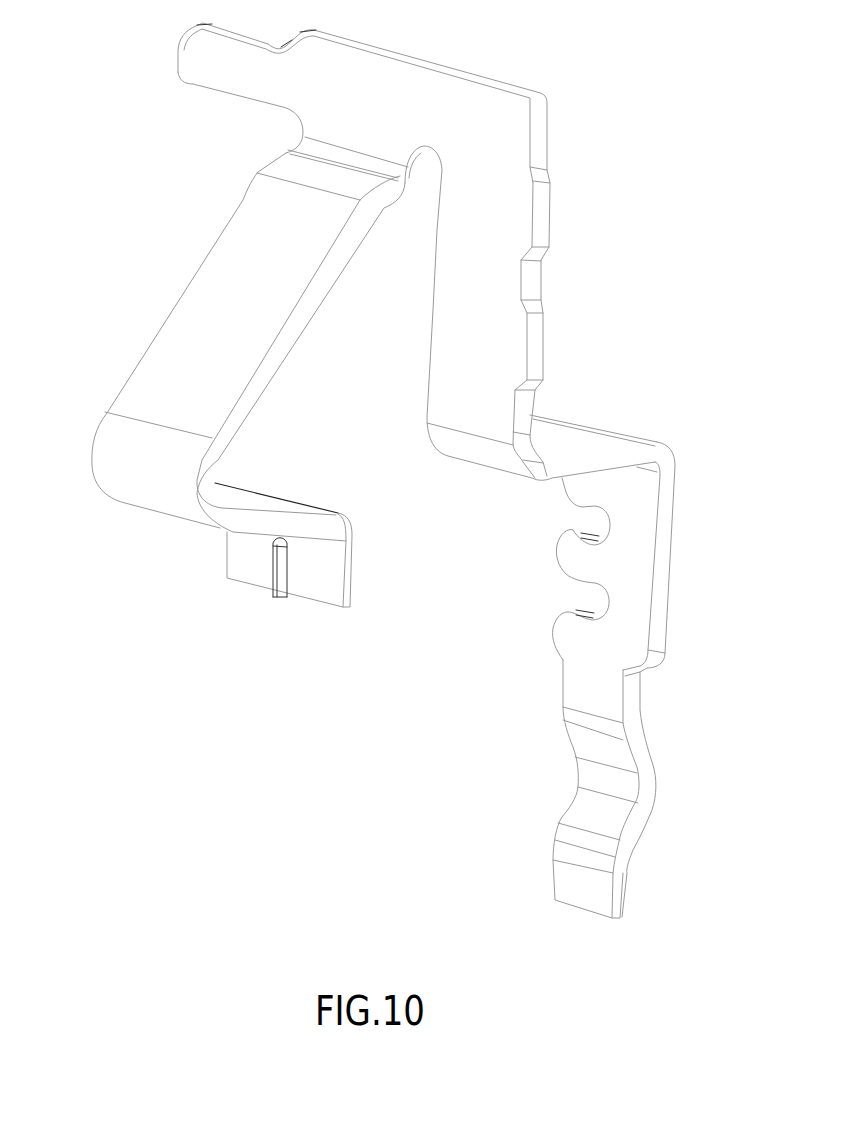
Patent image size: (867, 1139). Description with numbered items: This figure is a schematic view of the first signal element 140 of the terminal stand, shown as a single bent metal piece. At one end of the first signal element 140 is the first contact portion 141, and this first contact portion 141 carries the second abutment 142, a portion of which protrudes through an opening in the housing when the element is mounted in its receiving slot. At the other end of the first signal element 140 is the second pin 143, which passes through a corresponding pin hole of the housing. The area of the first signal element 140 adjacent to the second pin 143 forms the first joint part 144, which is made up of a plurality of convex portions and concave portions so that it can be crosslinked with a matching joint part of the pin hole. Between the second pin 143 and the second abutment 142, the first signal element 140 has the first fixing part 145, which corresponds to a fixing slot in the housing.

The first signal element 140 is at (112, 143).
The first contact portion 141 is at (306, 589).
The second abutment 142 is at (140, 497).
The second pin 143 is at (564, 894).
The first joint part 144 is at (565, 552).
The first fixing part 145 is at (496, 116).